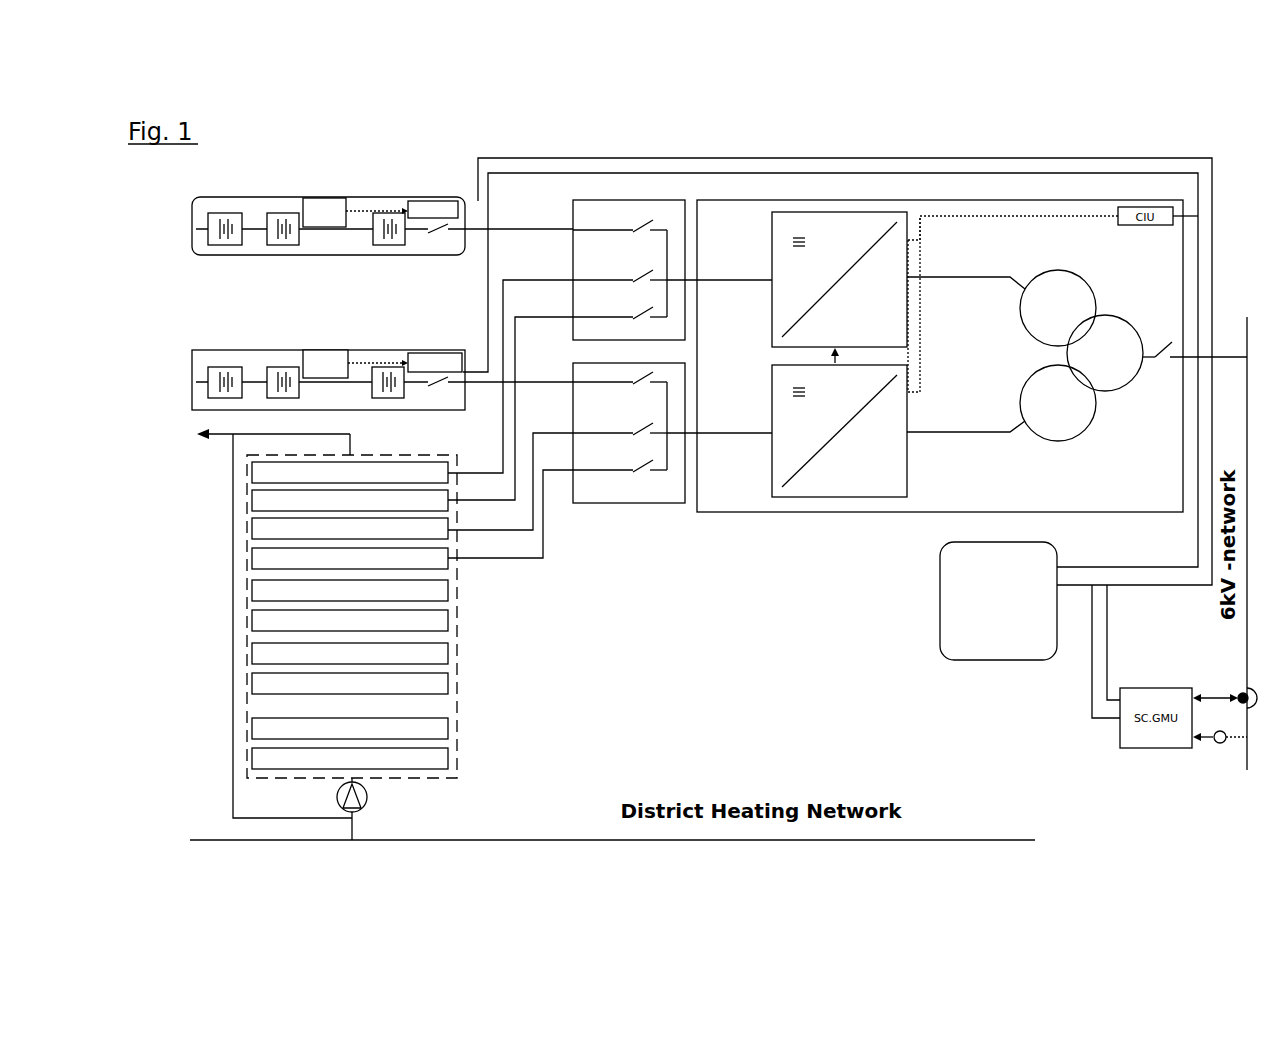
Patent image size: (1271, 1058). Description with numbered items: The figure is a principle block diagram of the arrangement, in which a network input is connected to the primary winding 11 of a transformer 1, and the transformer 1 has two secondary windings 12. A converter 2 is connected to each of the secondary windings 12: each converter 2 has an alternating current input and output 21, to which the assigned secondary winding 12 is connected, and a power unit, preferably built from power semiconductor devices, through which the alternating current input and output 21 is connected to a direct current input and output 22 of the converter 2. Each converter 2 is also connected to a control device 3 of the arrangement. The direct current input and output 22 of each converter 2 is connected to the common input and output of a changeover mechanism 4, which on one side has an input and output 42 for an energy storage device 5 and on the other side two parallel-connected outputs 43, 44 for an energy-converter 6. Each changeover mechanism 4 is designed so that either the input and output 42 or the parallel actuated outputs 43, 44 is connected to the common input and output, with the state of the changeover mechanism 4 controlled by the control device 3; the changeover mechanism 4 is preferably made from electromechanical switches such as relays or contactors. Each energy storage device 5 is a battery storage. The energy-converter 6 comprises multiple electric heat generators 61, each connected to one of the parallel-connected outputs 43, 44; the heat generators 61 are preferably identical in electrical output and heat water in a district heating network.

The transformer 1 is at (1077, 360).
The primary winding 11 is at (1105, 335).
The secondary winding 12 is at (1078, 287).
The converter 2 is at (852, 232).
The alternating current input and output 21 is at (908, 272).
The direct current input and output 22 is at (768, 280).
The control device 3 is at (1022, 650).
The changeover mechanism 4 is at (643, 378).
The input and output for energy storage device 42 is at (572, 232).
The parallel-connected output 43 is at (572, 281).
The parallel-connected output 44 is at (572, 318).
The energy storage device 5 is at (202, 247).
The energy-converter 6 is at (296, 634).
The electric heat generator 61 is at (252, 473).